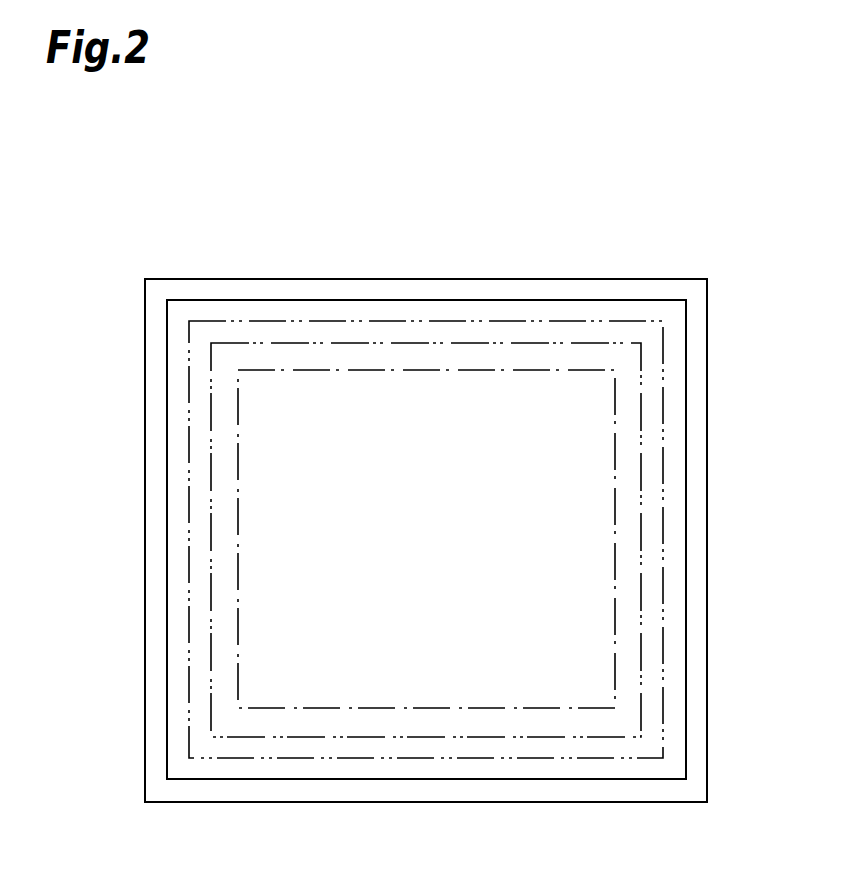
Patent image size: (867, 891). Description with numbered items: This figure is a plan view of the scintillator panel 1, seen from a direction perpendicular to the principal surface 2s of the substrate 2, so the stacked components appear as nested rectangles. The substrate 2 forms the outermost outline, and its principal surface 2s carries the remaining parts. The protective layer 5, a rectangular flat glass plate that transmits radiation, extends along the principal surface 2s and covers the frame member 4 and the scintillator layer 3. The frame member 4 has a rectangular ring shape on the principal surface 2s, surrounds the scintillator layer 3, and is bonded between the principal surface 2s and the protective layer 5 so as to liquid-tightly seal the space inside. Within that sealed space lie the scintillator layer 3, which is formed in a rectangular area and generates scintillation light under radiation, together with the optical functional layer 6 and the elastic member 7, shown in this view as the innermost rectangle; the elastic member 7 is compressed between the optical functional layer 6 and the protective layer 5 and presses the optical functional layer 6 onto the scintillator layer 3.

The scintillator panel 1 is at (684, 194).
The substrate 2 is at (707, 402).
The principal surface 2s is at (696, 472).
The scintillator layer 3 is at (400, 707).
The frame member 4 is at (605, 759).
The protective layer 5 is at (545, 301).
The optical functional layer 6 is at (426, 619).
The elastic member 7 is at (426, 619).